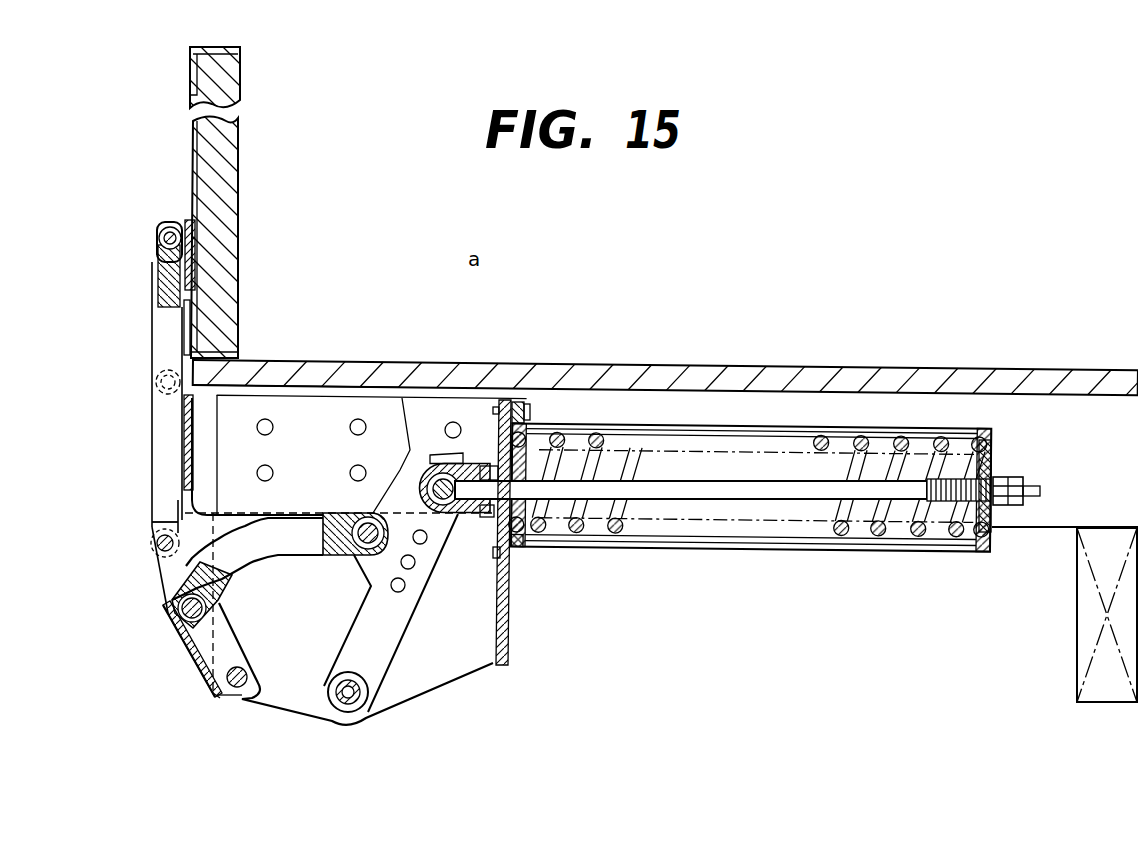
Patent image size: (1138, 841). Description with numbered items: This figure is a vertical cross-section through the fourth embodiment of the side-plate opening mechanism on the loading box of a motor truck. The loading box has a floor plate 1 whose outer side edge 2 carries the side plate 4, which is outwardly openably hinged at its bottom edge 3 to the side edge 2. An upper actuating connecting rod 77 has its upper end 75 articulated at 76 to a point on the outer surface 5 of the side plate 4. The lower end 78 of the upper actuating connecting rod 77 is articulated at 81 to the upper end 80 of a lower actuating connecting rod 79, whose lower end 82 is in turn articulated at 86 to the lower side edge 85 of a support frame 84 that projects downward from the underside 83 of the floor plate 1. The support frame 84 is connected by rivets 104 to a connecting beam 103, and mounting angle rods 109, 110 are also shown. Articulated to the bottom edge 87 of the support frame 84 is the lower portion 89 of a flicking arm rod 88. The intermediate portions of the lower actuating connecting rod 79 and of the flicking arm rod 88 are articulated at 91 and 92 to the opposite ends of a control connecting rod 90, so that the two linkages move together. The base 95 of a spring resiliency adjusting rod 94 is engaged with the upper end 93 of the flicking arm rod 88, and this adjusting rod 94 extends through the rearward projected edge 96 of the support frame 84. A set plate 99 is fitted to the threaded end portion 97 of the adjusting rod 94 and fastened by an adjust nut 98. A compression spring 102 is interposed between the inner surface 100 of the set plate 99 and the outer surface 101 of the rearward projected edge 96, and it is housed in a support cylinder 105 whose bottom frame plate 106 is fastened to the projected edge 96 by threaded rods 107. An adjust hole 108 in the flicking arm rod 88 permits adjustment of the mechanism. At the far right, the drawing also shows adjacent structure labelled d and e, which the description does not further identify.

The floor plate 1 is at (370, 372).
The outer side edge 2 is at (210, 373).
The bottom edge 3 is at (205, 345).
The side plate 4 is at (206, 126).
The outer surface 5 is at (194, 156).
The upper end 75 is at (160, 252).
The articulation point 76 is at (165, 230).
The upper actuating connecting rod 77 is at (160, 417).
The lower end 78 is at (160, 522).
The lower actuating connecting rod 79 is at (190, 660).
The upper end 80 is at (170, 600).
The articulation point 81 is at (160, 548).
The lower end 82 is at (215, 700).
The underside 83 is at (325, 383).
The support frame 84 is at (298, 650).
The lower side edge 85 is at (278, 700).
The articulation point 86 is at (237, 690).
The bottom edge 87 is at (348, 712).
The flicking arm rod 88 is at (393, 633).
The lower portion 89 is at (362, 712).
The control connecting rod 90 is at (233, 542).
The articulation point 91 is at (185, 615).
The articulation point 92 is at (447, 462).
The upper end 93 is at (400, 520).
The spring resiliency adjusting rod 94 is at (686, 502).
The base 95 is at (504, 498).
The rearward projected edge 96 is at (506, 403).
The threaded end portion 97 is at (945, 502).
The adjust nut 98 is at (1005, 508).
The set plate 99 is at (988, 515).
The inner surface 100 is at (978, 520).
The outer surface 101 is at (518, 420).
The compression spring 102 is at (835, 544).
The connecting beam 103 is at (200, 448).
The rivets 104 is at (272, 466).
The support cylinder 105 is at (745, 544).
The bottom frame plate 106 is at (527, 538).
The threaded rods 107 is at (520, 560).
The adjust hole 108 is at (427, 540).
The mounting angle rod 109 is at (158, 386).
The mounting angle rod 110 is at (183, 318).
The wall d is at (1055, 528).
The member e is at (1080, 628).